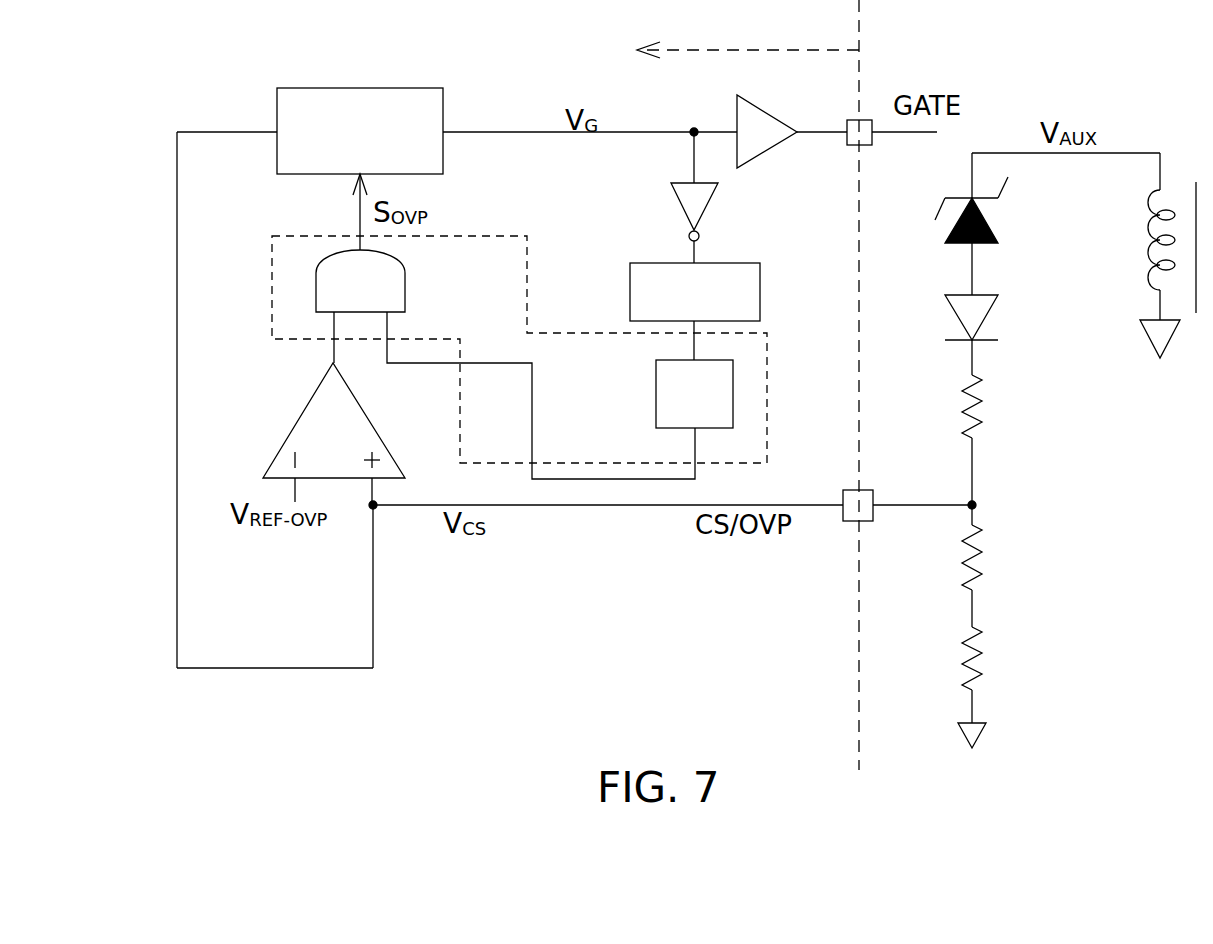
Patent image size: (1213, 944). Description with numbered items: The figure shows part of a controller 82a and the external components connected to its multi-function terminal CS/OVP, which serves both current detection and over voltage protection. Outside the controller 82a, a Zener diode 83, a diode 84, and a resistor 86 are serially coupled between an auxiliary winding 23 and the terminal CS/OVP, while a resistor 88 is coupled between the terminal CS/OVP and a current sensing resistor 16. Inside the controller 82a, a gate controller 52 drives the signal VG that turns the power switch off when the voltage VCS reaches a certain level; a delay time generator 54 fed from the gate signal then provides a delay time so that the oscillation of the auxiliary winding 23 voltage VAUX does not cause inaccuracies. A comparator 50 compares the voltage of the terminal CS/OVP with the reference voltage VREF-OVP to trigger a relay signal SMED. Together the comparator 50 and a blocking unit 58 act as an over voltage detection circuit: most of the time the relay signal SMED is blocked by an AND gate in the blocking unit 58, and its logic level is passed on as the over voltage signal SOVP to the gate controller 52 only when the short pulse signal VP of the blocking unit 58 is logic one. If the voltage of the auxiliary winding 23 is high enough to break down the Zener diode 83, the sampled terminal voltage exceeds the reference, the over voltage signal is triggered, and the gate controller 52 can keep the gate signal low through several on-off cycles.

The gate controller 52 is at (376, 153).
The blocking unit 58 is at (483, 236).
The delay time generator 54 is at (630, 292).
The comparator 50 is at (349, 430).
The controller 82a is at (812, 41).
The Zener diode 83 is at (998, 218).
The diode 84 is at (988, 316).
The resistor 86 is at (978, 410).
The resistor 88 is at (978, 560).
The current sensing resistor 16 is at (978, 660).
The auxiliary winding 23 is at (1150, 242).